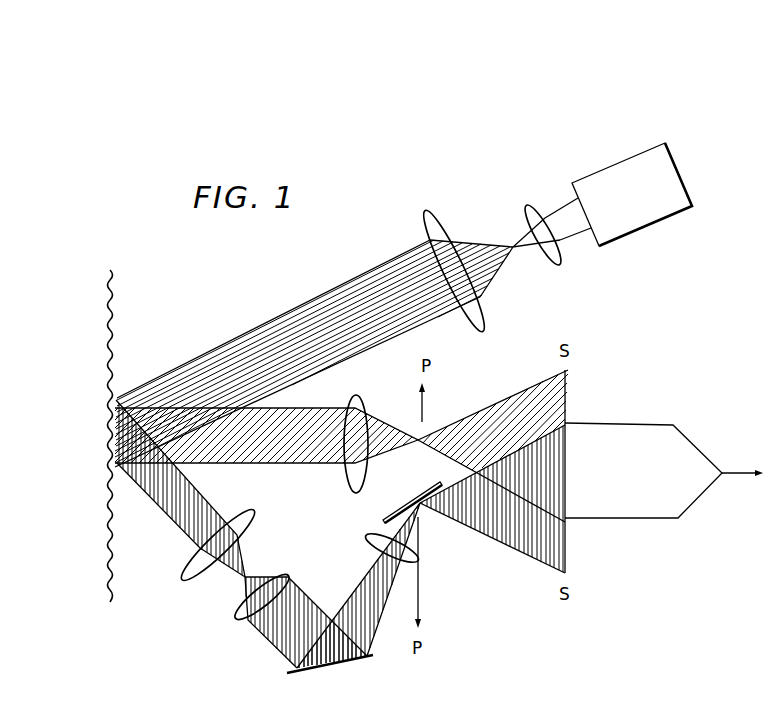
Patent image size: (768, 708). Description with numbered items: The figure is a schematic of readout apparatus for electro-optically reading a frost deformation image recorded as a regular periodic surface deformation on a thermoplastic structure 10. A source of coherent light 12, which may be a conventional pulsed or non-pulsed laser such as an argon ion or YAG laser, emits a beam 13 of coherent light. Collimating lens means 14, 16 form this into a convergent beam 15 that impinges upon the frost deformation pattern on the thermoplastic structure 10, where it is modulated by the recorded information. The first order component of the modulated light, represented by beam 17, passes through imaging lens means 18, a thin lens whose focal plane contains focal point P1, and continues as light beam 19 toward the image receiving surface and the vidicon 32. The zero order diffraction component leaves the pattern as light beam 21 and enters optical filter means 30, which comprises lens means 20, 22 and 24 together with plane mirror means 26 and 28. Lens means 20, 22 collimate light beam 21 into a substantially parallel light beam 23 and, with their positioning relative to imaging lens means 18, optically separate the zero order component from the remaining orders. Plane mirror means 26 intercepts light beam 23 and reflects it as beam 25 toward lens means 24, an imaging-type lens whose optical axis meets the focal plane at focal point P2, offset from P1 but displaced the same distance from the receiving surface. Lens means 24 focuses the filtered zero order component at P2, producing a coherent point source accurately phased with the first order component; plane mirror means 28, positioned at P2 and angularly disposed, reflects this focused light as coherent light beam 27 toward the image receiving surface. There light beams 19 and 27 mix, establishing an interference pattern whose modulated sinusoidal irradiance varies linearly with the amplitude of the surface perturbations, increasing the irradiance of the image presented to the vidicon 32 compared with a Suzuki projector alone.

The thermoplastic structure 10 is at (101, 601).
The source of coherent light 12 is at (644, 239).
The beam of coherent light 13 is at (576, 239).
The collimating lens means 14 is at (528, 212).
The convergent beam 15 is at (277, 317).
The collimating lens means 16 is at (423, 222).
The first order component beam 17 is at (307, 468).
The imaging lens means 18 is at (353, 487).
The light beam 19 is at (494, 407).
The lens means 20 is at (187, 565).
The light beam 21 is at (157, 508).
The lens means 22 is at (240, 607).
The light beam 23 is at (275, 647).
The lens means 24 is at (367, 537).
The light beam 25 is at (353, 575).
The plane mirror means 26 is at (333, 666).
The coherent light beam 27 is at (488, 537).
The plane mirror means 28 is at (413, 492).
The optical filter means 30 is at (306, 541).
The vidicon 32 is at (633, 412).
The focal point P1 is at (416, 438).
The focal point P2 is at (423, 506).